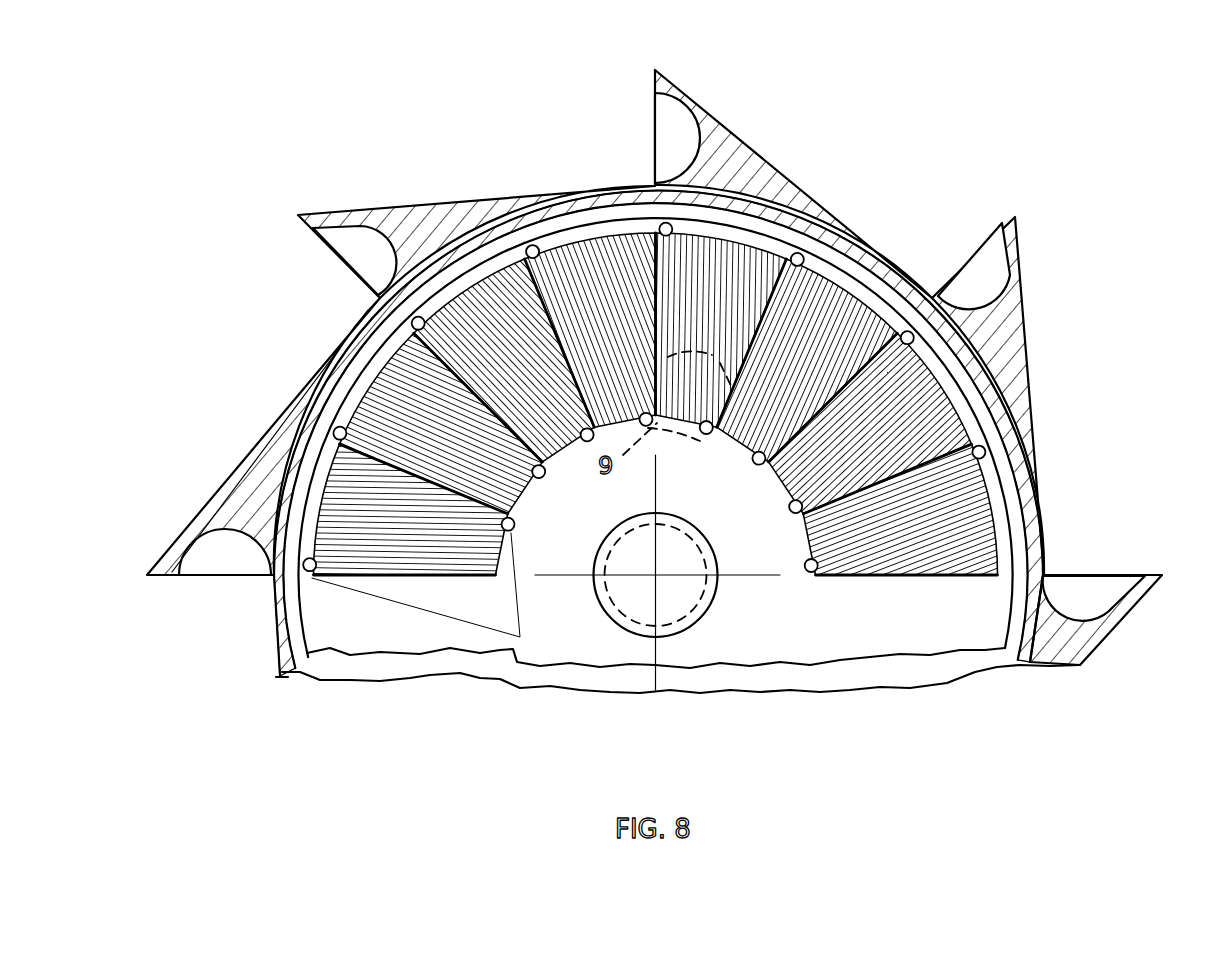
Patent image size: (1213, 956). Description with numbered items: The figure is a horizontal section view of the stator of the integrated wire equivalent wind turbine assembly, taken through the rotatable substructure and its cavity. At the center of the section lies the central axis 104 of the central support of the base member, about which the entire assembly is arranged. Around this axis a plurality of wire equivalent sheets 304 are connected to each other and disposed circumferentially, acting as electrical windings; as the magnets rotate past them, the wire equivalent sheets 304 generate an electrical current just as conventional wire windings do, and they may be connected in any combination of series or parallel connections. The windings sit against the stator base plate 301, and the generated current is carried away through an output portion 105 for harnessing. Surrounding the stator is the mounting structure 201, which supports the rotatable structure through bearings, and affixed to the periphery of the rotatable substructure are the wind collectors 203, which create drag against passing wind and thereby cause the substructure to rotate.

The central axis 104 is at (657, 577).
The output portion 105 is at (520, 637).
The mounting structure 201 is at (313, 683).
The wind collectors 203 is at (207, 577).
The stator base plate 301 is at (998, 650).
The wire equivalent sheets 304 is at (325, 490).